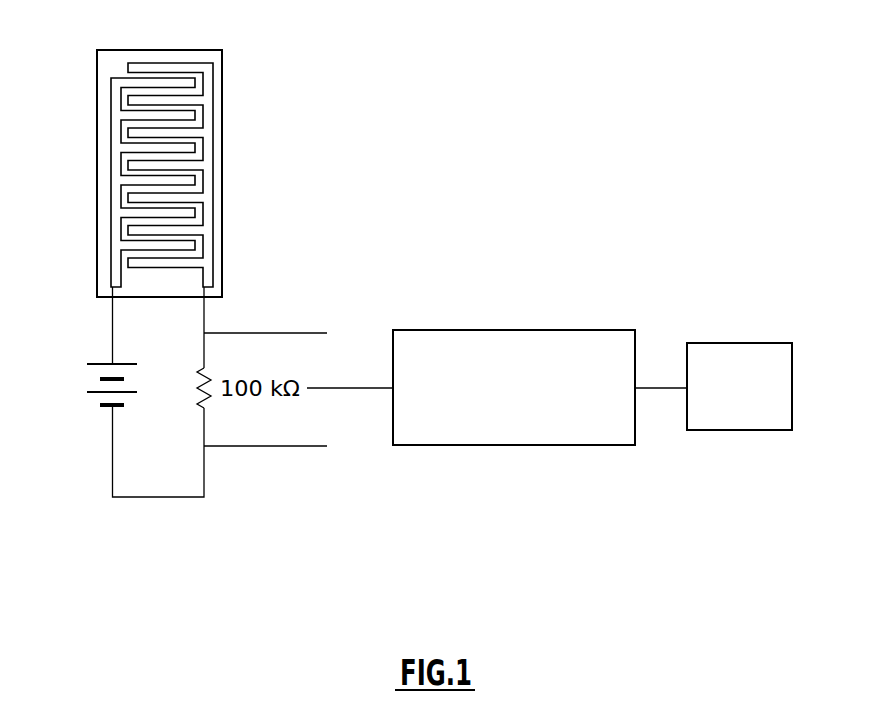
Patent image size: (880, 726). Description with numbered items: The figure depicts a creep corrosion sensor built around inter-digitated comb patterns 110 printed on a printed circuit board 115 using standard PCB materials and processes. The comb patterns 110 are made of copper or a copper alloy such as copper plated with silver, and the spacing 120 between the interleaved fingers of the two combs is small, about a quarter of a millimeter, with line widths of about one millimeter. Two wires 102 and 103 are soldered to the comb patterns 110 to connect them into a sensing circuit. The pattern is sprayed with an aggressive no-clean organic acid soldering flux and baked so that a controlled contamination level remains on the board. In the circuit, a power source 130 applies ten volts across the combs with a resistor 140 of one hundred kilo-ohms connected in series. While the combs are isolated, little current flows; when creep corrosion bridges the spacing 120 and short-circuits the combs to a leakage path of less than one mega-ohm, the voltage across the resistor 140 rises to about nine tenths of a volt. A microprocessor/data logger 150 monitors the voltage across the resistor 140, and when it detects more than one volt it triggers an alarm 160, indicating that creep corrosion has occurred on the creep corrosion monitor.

The wire 102 is at (112, 323).
The wire 103 is at (205, 318).
The inter-digitated comb patterns 110 is at (212, 78).
The printed circuit board 115 is at (111, 53).
The spacing 120 is at (197, 118).
The power source 130 is at (50, 396).
The resistor 140 is at (258, 447).
The microprocessor/data logger 150 is at (527, 446).
The alarm 160 is at (742, 432).